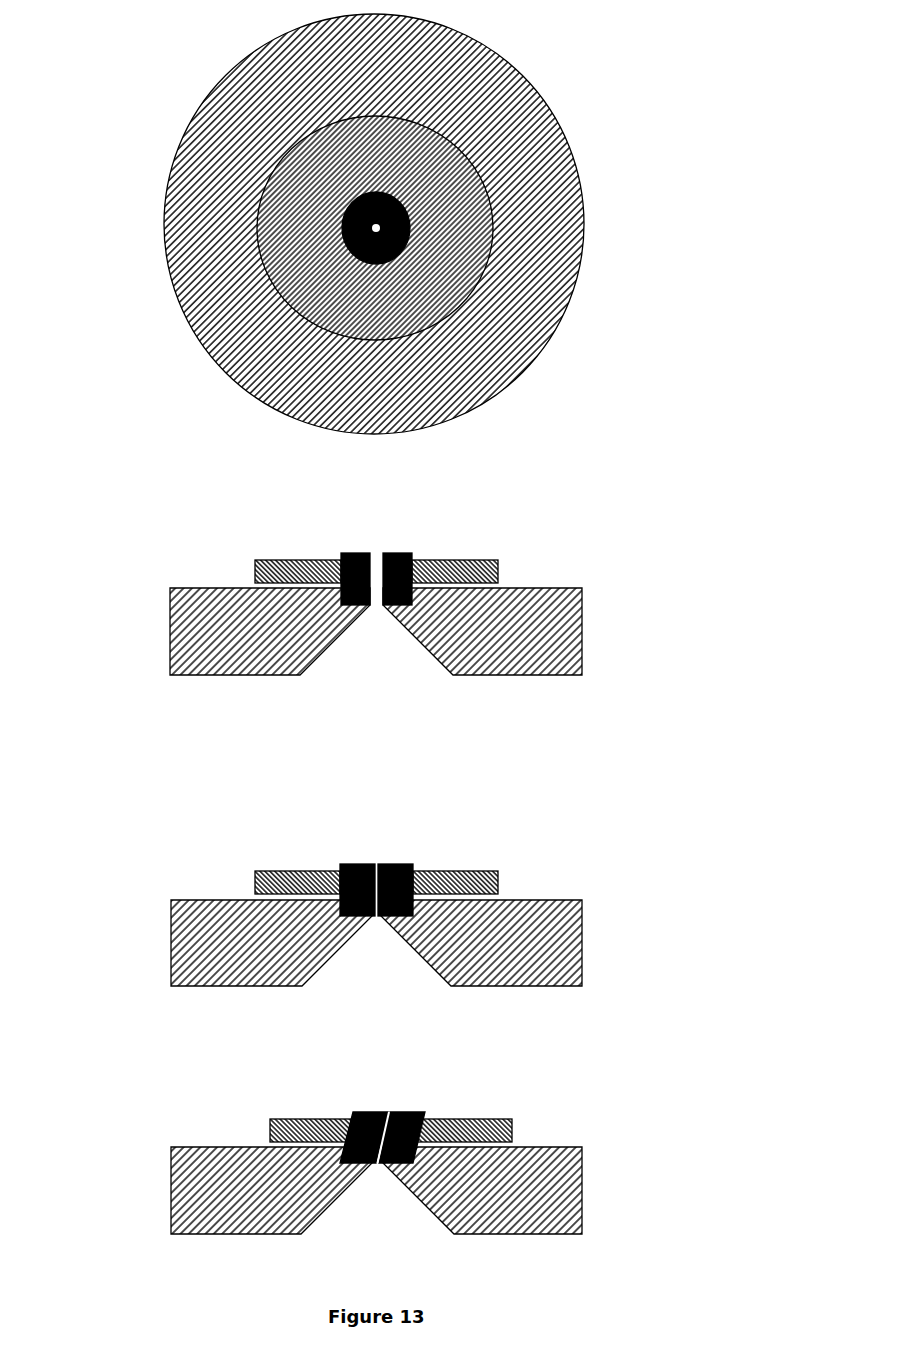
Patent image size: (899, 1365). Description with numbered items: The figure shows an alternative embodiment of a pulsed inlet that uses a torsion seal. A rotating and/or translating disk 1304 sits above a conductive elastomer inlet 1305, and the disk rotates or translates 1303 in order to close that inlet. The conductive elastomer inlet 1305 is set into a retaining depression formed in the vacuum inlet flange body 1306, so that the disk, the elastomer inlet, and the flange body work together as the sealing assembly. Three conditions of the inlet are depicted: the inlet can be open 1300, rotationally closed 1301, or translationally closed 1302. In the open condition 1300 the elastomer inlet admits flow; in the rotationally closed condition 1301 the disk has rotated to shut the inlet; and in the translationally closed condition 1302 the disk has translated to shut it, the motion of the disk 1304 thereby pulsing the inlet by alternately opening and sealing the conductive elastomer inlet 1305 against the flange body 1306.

The open inlet state 1300 is at (341, 612).
The rotationally closed inlet state 1301 is at (303, 925).
The translationally closed inlet state 1302 is at (303, 1173).
The rotation or translation of the disk 1303 is at (305, 97).
The rotating and/or translating disk 1304 is at (253, 570).
The conductive elastomer inlet 1305 is at (395, 555).
The vacuum inlet flange body 1306 is at (170, 675).